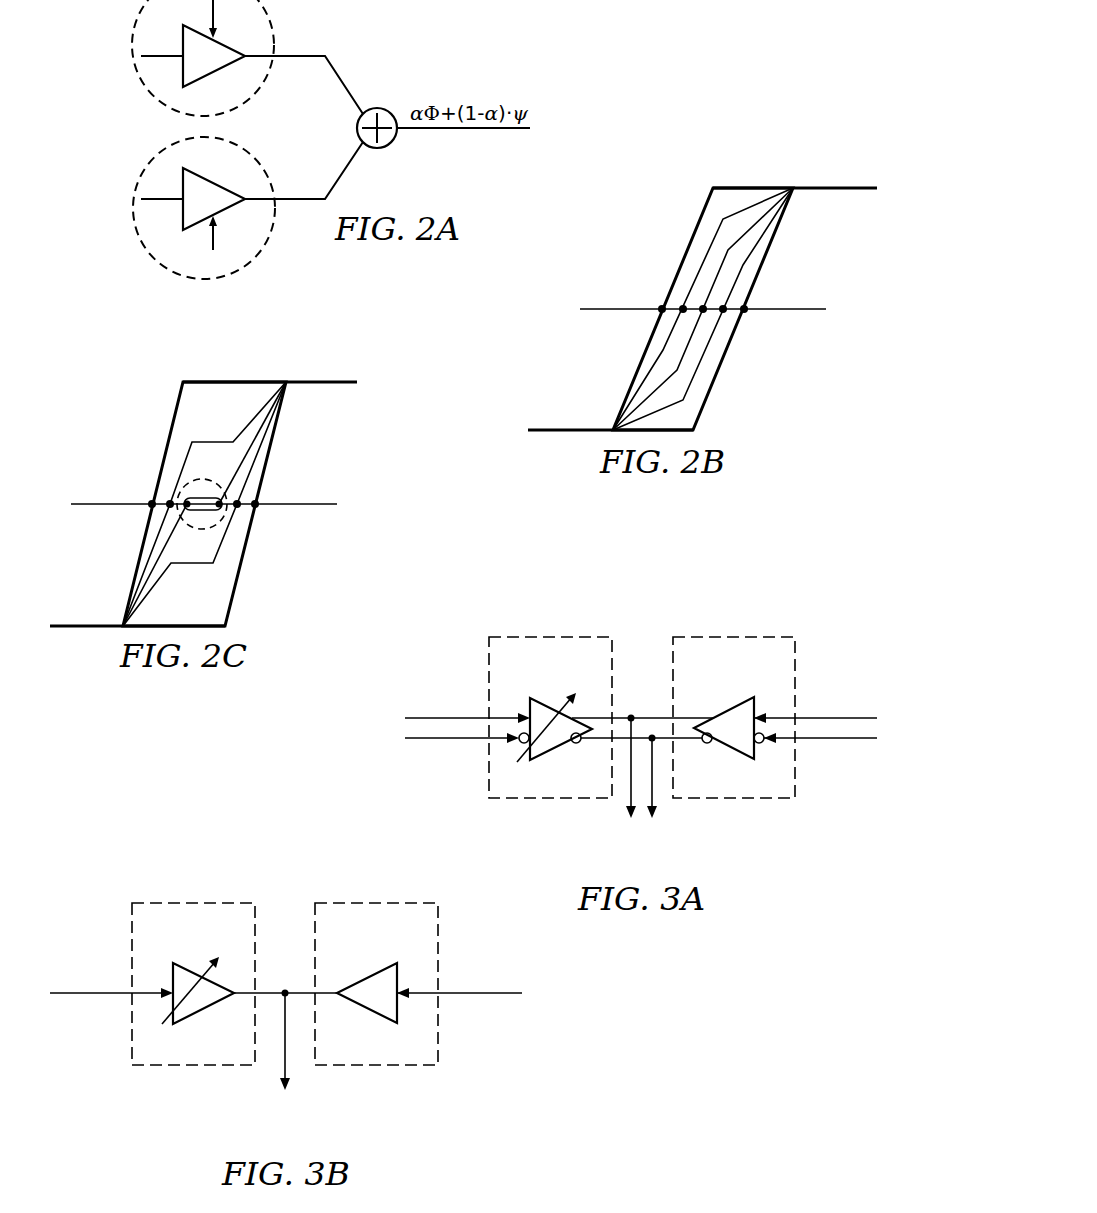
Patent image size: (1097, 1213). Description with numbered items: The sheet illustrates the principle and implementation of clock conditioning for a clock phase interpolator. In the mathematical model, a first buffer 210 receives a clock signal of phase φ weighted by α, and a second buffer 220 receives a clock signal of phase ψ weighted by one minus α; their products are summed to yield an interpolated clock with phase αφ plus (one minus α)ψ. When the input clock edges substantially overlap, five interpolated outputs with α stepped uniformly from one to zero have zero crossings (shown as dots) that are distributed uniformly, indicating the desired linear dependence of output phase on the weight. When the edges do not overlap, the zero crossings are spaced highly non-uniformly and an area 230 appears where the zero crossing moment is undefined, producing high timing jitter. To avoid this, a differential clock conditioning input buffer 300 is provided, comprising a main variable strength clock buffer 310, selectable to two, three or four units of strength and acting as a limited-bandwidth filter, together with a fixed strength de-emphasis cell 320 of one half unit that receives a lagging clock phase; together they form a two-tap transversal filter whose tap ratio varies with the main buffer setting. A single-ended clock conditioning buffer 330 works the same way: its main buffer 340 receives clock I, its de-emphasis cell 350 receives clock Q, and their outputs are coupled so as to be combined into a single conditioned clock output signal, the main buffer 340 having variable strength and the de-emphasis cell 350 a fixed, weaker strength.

In FIG. 2A, the first buffer 210 is at (132, 42).
In FIG. 2A, the second buffer 220 is at (132, 207).
In FIG. 2C, the area 230 is at (202, 479).
In FIG. 3A, the clock conditioning input buffer 300 is at (642, 716).
In FIG. 3A, the main variable strength clock buffer 310 is at (569, 676).
In FIG. 3A, the de-emphasis cell 320 is at (752, 676).
In FIG. 3B, the single-ended clock conditioning buffer 330 is at (287, 985).
In FIG. 3B, the main buffer 340 is at (212, 940).
In FIG. 3B, the de-emphasis cell 350 is at (396, 940).